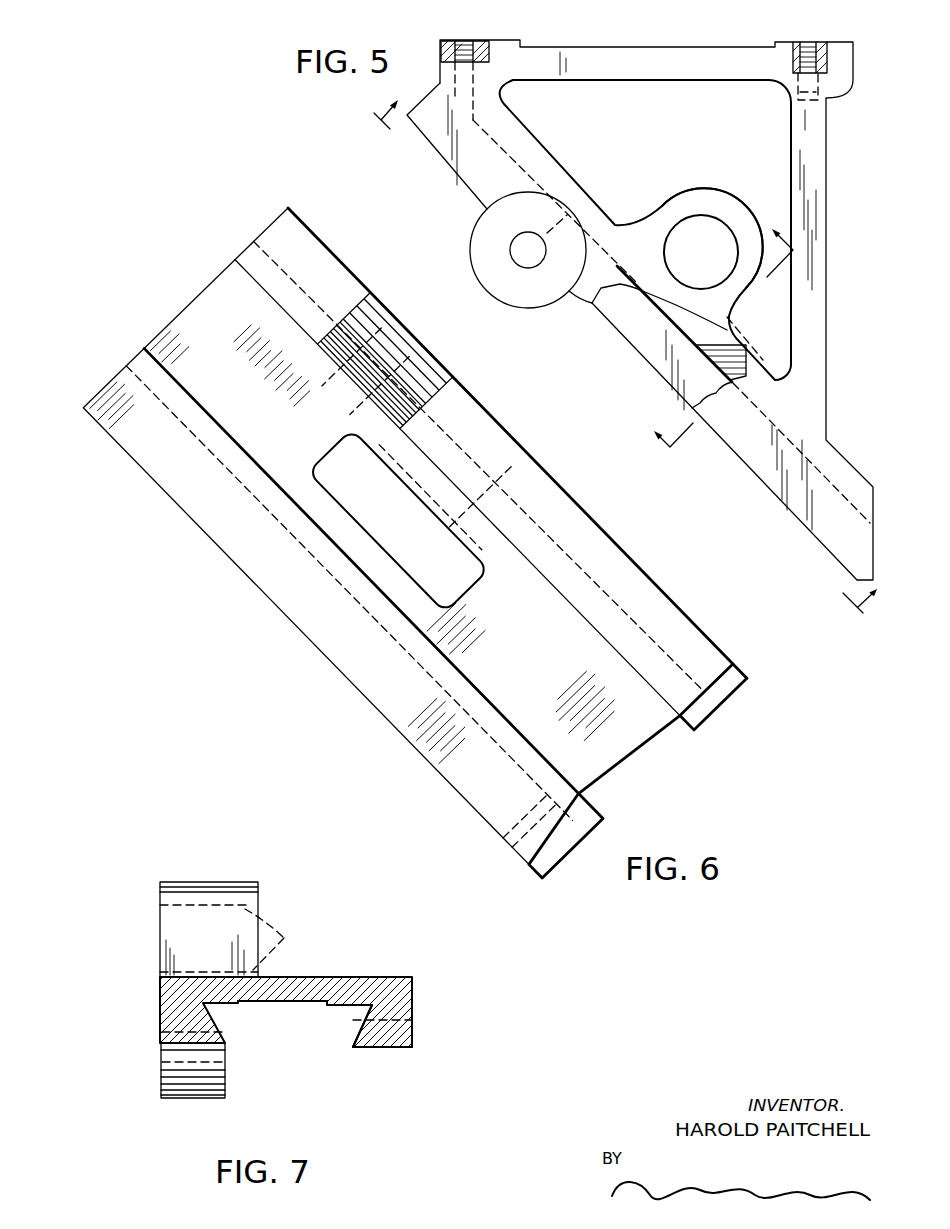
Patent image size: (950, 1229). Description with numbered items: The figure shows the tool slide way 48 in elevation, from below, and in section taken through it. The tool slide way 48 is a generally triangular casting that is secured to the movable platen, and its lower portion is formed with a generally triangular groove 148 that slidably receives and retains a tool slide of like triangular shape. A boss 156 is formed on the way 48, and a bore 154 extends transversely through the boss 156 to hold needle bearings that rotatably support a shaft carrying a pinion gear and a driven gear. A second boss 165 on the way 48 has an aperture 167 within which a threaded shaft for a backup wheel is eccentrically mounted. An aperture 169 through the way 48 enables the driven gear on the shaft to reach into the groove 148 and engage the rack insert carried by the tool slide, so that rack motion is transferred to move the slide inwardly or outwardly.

In FIG. 5, the tool slide way 48 is at (545, 159).
In FIG. 6, the tool slide way 48 is at (219, 279).
In FIG. 7, the tool slide way 48 is at (373, 978).
In FIG. 6, the groove 148 is at (670, 716).
In FIG. 7, the groove 148 is at (353, 1030).
In FIG. 5, the bore 154 is at (698, 216).
In FIG. 6, the bore 154 is at (530, 493).
In FIG. 7, the bore 154 is at (279, 939).
In FIG. 5, the boss 156 is at (669, 194).
In FIG. 6, the boss 156 is at (530, 493).
In FIG. 7, the boss 156 is at (258, 896).
In FIG. 5, the boss 165 is at (537, 308).
In FIG. 6, the boss 165 is at (385, 317).
In FIG. 7, the boss 165 is at (162, 1093).
In FIG. 5, the aperture 167 is at (512, 246).
In FIG. 6, the aperture 167 is at (385, 343).
In FIG. 7, the aperture 167 is at (173, 1050).
In FIG. 6, the aperture 169 is at (472, 588).
In FIG. 7, the aperture 169 is at (300, 1000).